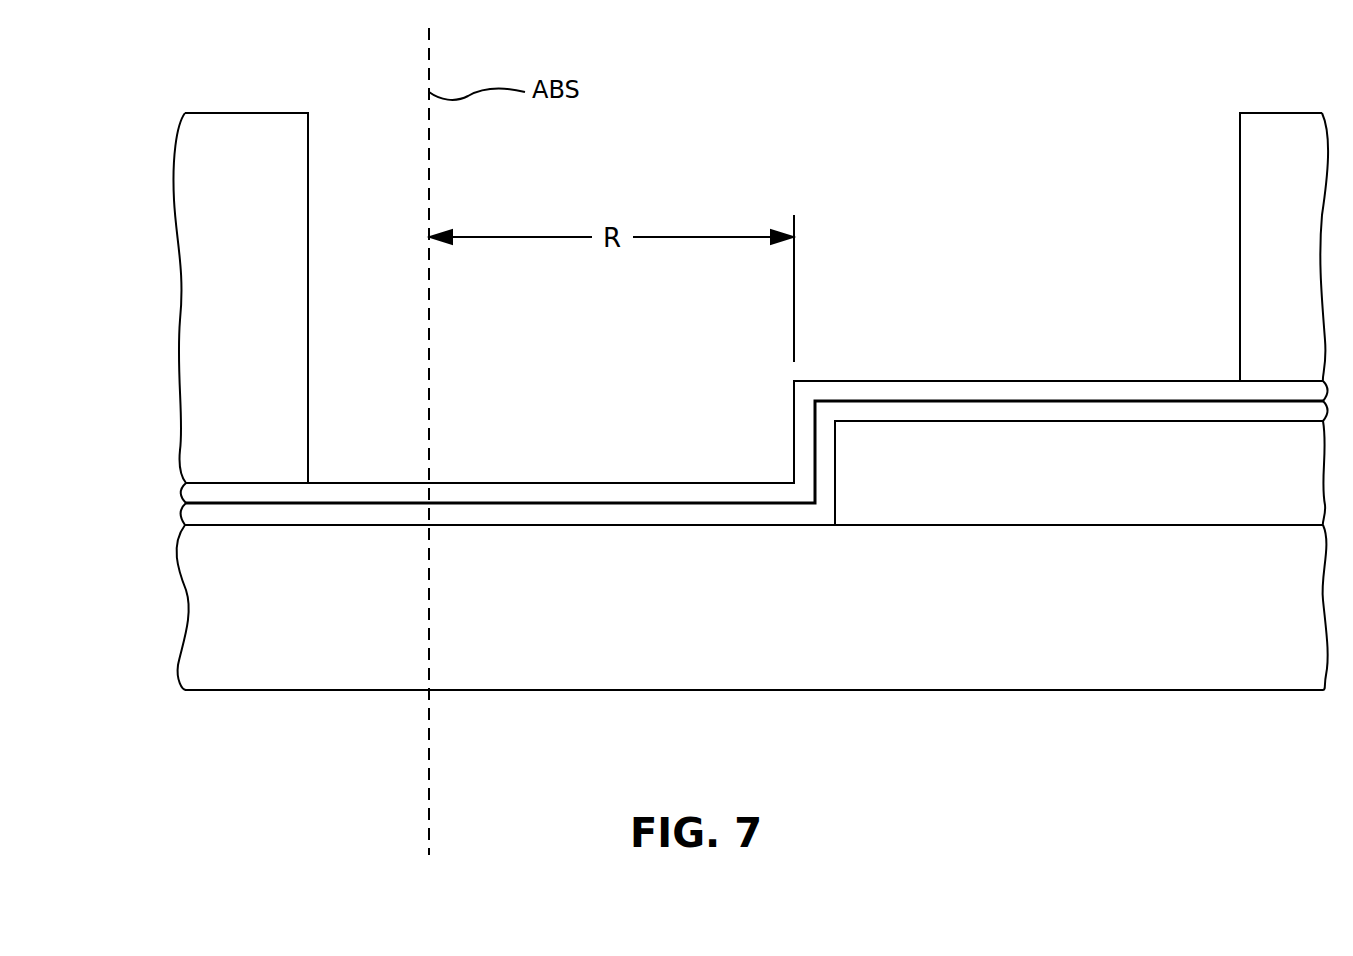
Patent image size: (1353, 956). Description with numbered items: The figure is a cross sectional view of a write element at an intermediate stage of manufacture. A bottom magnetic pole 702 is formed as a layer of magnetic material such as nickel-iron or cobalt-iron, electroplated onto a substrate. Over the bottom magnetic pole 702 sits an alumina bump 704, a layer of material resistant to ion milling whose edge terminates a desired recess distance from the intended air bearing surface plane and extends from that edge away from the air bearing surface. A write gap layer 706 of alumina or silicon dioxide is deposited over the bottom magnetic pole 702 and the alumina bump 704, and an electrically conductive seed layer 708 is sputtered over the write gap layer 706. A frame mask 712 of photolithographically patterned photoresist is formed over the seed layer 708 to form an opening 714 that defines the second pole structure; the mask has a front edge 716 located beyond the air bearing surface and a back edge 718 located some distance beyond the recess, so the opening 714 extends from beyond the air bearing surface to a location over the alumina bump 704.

The bottom magnetic pole 702 is at (832, 606).
The alumina bump 704 is at (1078, 465).
The write gap layer 706 is at (1157, 410).
The seed layer 708 is at (990, 391).
The frame mask 712 is at (247, 235).
The opening 714 is at (833, 175).
The front edge 716 is at (308, 152).
The back edge 718 is at (1240, 238).